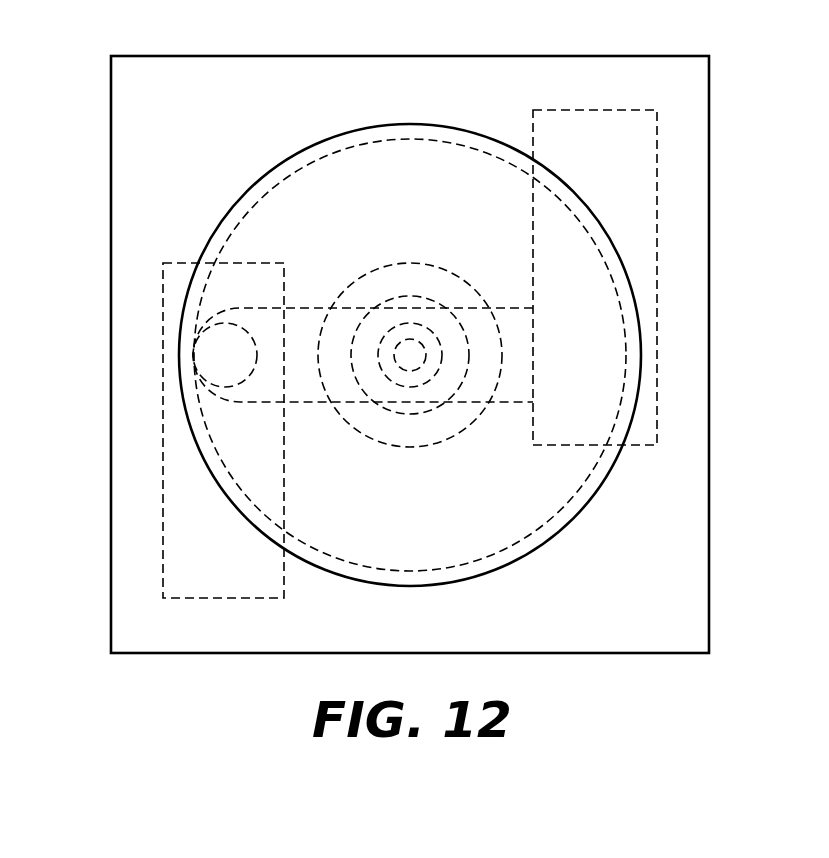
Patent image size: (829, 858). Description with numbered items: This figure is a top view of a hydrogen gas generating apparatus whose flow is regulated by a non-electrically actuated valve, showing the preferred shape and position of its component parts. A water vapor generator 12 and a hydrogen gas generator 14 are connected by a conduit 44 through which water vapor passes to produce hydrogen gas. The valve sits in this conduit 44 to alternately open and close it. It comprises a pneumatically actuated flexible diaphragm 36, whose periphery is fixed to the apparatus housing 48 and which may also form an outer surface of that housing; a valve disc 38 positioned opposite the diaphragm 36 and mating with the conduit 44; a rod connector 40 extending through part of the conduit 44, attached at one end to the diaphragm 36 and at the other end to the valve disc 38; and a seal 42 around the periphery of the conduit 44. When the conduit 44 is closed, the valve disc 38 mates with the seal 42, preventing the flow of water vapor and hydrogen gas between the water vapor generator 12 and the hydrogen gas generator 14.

The apparatus housing 48 is at (133, 110).
The flexible diaphragm 36 is at (313, 190).
The hydrogen gas generator 14 is at (635, 150).
The water vapor generator 12 is at (183, 560).
The seal 42 is at (367, 420).
The valve disc 38 is at (425, 408).
The conduit 44 is at (424, 317).
The rod connector 40 is at (413, 357).